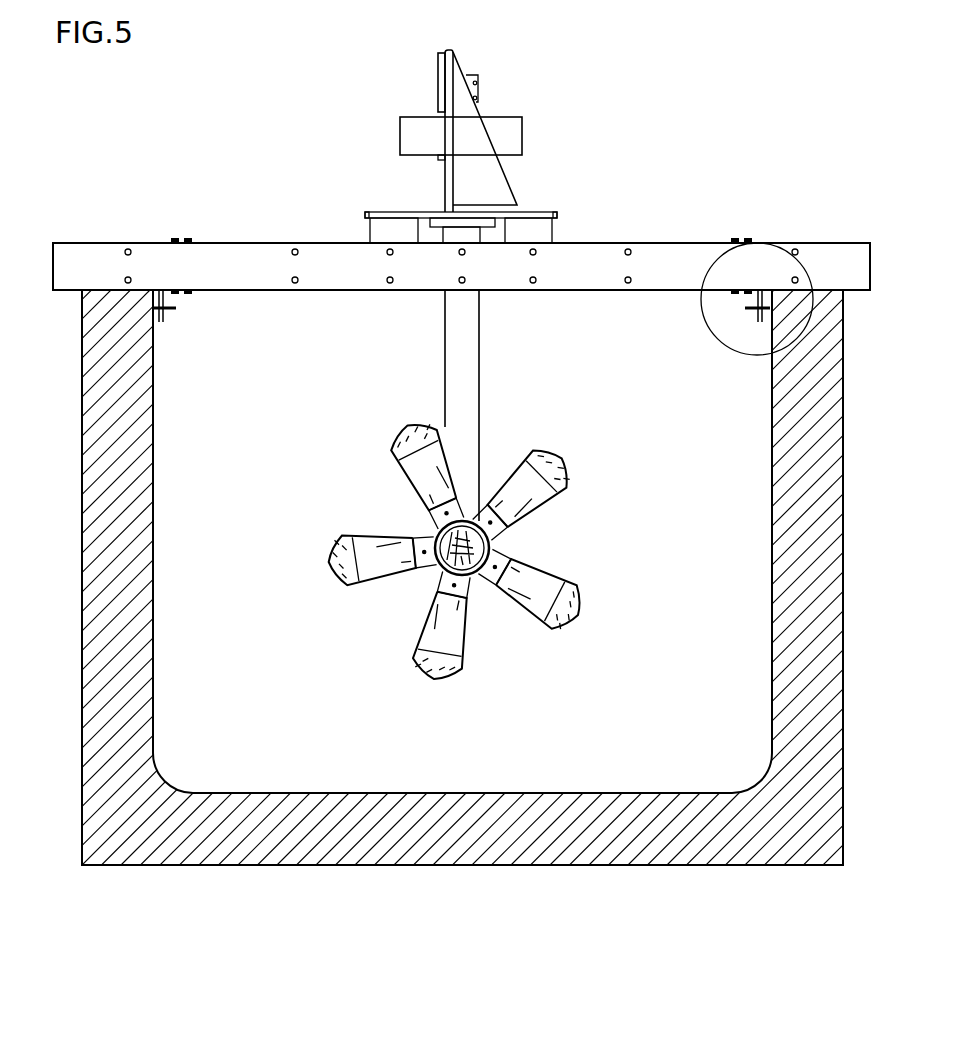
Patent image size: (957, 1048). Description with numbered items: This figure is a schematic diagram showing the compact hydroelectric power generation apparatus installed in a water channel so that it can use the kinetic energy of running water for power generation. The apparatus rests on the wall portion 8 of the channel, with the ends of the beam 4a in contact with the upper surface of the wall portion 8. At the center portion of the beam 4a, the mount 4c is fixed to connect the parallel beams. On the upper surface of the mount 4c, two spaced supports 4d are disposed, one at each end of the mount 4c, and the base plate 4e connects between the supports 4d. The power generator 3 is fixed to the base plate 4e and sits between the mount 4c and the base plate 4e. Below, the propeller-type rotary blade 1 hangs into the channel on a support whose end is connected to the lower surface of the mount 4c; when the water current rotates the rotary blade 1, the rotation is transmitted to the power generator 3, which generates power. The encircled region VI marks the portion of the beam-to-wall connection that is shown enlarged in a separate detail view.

The rotary blade 1 is at (545, 500).
The power generator 3 is at (414, 128).
The beam 4a is at (262, 278).
The mount 4c is at (388, 213).
The support 4d is at (490, 178).
The base plate 4e is at (438, 72).
The wall portion 8 is at (780, 852).
The detail view VI is at (722, 348).